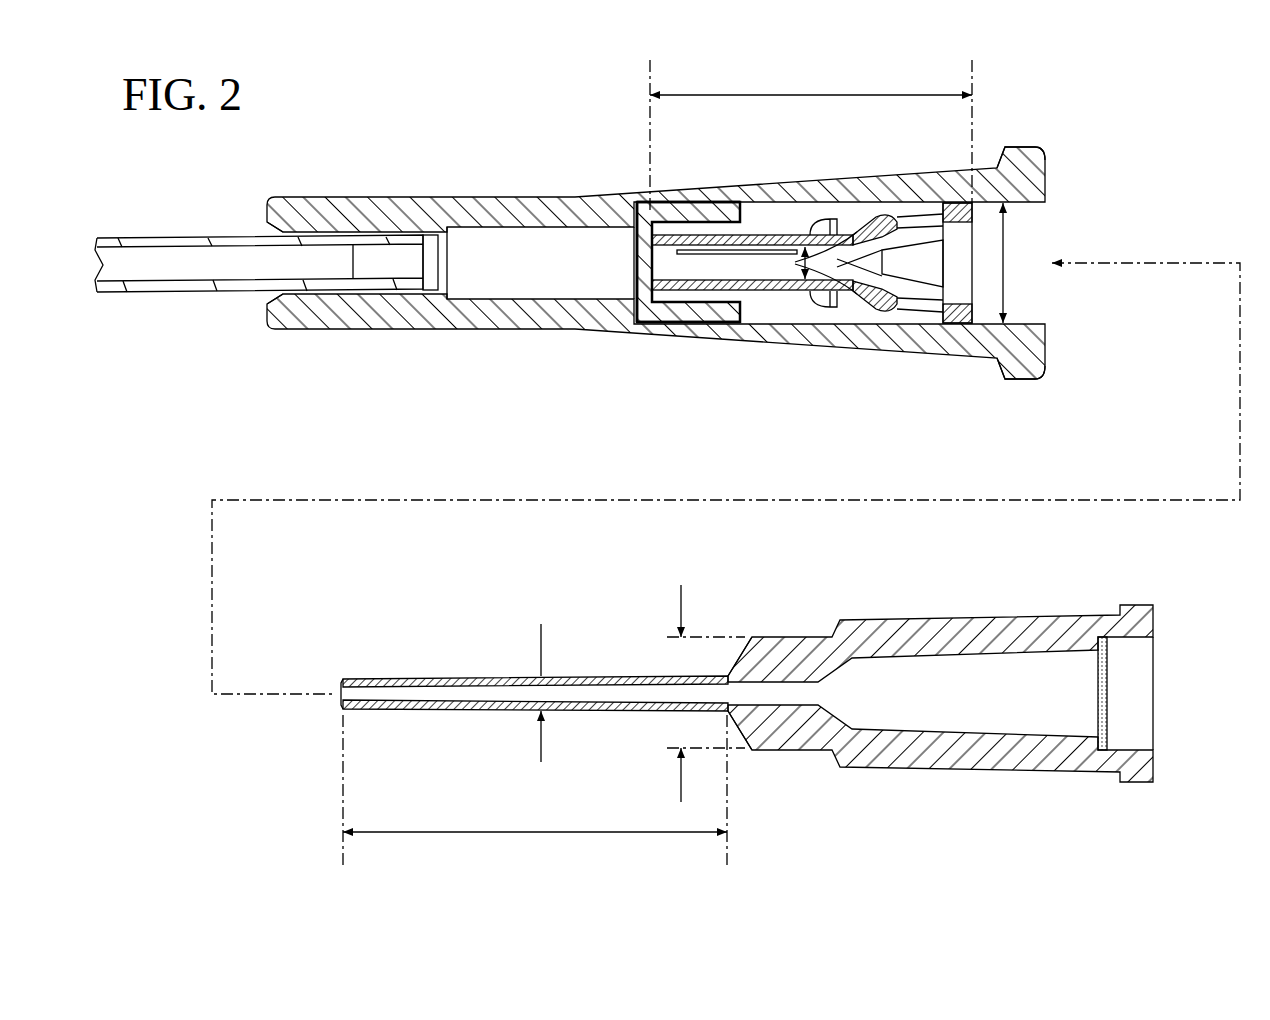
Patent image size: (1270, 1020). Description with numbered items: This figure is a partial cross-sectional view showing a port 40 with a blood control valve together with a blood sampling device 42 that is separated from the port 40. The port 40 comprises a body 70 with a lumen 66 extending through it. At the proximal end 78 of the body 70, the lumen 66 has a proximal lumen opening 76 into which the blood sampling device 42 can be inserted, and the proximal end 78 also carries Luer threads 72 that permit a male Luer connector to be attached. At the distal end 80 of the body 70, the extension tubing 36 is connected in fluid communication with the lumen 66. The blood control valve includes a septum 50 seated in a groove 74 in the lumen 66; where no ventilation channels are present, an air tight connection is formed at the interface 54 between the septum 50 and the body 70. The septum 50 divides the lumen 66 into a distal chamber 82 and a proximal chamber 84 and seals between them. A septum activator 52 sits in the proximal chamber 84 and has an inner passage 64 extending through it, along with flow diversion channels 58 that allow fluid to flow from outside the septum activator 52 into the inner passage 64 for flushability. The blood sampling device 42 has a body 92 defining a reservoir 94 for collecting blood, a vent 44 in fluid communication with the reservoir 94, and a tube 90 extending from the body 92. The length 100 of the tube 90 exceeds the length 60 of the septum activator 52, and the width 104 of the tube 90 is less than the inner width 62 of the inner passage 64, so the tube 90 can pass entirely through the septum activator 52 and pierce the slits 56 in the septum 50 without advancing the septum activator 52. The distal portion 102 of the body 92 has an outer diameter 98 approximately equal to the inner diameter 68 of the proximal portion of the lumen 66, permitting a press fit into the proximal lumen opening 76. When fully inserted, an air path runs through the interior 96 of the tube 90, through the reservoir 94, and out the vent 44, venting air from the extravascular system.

The extension tubing 36 is at (157, 236).
The port 40 is at (338, 330).
The blood sampling device 42 is at (893, 757).
The vent 44 is at (1112, 712).
The septum 50 is at (640, 324).
The septum activator 52 is at (767, 291).
The interface 54 is at (682, 323).
The slits 56 is at (636, 262).
The flow diversion channels 58 is at (783, 250).
The length of the septum activator 60 is at (770, 95).
The inner width of the inner passage 62 is at (855, 225).
The inner passage 64 is at (897, 216).
The lumen 66 is at (525, 246).
The inner diameter 68 is at (1012, 262).
The body 70 is at (495, 318).
The Luer threads 72 is at (1020, 378).
The groove 74 is at (700, 204).
The proximal lumen opening 76 is at (1047, 295).
The proximal end 78 is at (1047, 178).
The distal end 80 is at (283, 223).
The distal chamber 82 is at (562, 262).
The proximal chamber 84 is at (860, 312).
The tube 90 is at (463, 678).
The body 92 is at (913, 618).
The reservoir 94 is at (1022, 697).
The interior 96 is at (393, 690).
The outer diameter 98 is at (683, 610).
The length of the tube 100 is at (482, 832).
The distal portion 102 is at (768, 742).
The width of the tube 104 is at (541, 652).